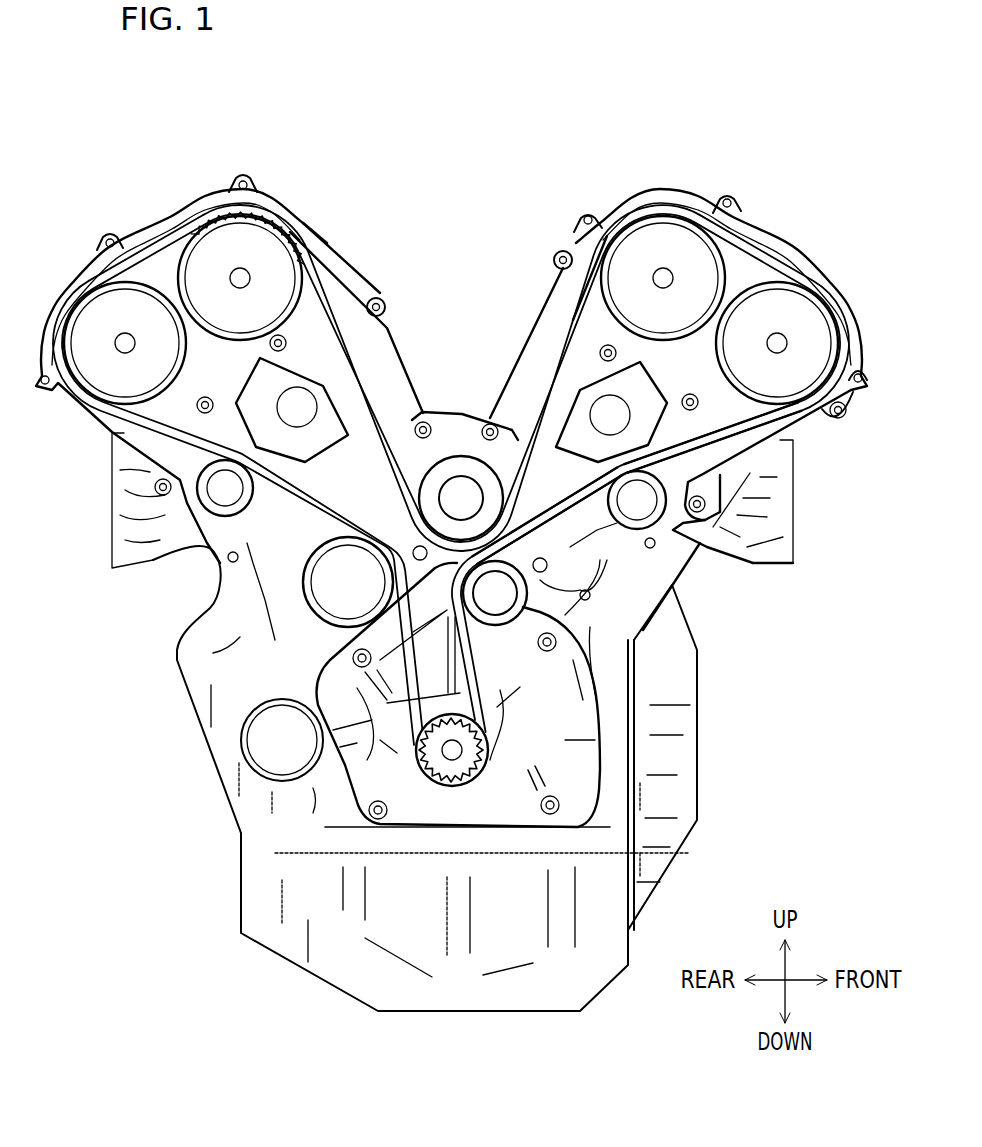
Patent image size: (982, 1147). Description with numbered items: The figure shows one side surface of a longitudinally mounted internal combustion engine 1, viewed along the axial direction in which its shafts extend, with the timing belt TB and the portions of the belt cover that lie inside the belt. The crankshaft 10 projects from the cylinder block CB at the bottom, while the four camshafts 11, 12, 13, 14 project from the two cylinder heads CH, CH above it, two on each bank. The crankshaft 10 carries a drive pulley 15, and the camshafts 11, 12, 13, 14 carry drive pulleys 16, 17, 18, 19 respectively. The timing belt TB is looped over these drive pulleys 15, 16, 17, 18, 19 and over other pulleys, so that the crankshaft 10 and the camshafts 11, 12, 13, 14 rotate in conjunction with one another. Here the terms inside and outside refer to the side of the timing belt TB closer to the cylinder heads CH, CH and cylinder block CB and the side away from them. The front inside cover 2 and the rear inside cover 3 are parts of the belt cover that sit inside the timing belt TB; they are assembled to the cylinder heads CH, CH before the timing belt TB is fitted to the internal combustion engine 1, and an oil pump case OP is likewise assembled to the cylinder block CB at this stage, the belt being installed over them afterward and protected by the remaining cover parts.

The internal combustion engine 1 is at (470, 137).
The front inside cover 2 is at (557, 280).
The rear inside cover 3 is at (345, 268).
The crankshaft 10 is at (460, 757).
The camshaft 11 is at (778, 342).
The camshaft 12 is at (665, 278).
The camshaft 13 is at (240, 277).
The camshaft 14 is at (125, 342).
The drive pulley 15 is at (540, 793).
The drive pulley 16 is at (827, 318).
The drive pulley 17 is at (668, 222).
The drive pulley 18 is at (263, 243).
The drive pulley 19 is at (95, 307).
The timing belt TB is at (370, 397).
The cylinder head CH is at (112, 522).
The cylinder block CB is at (630, 660).
The oil pump case OP is at (600, 723).